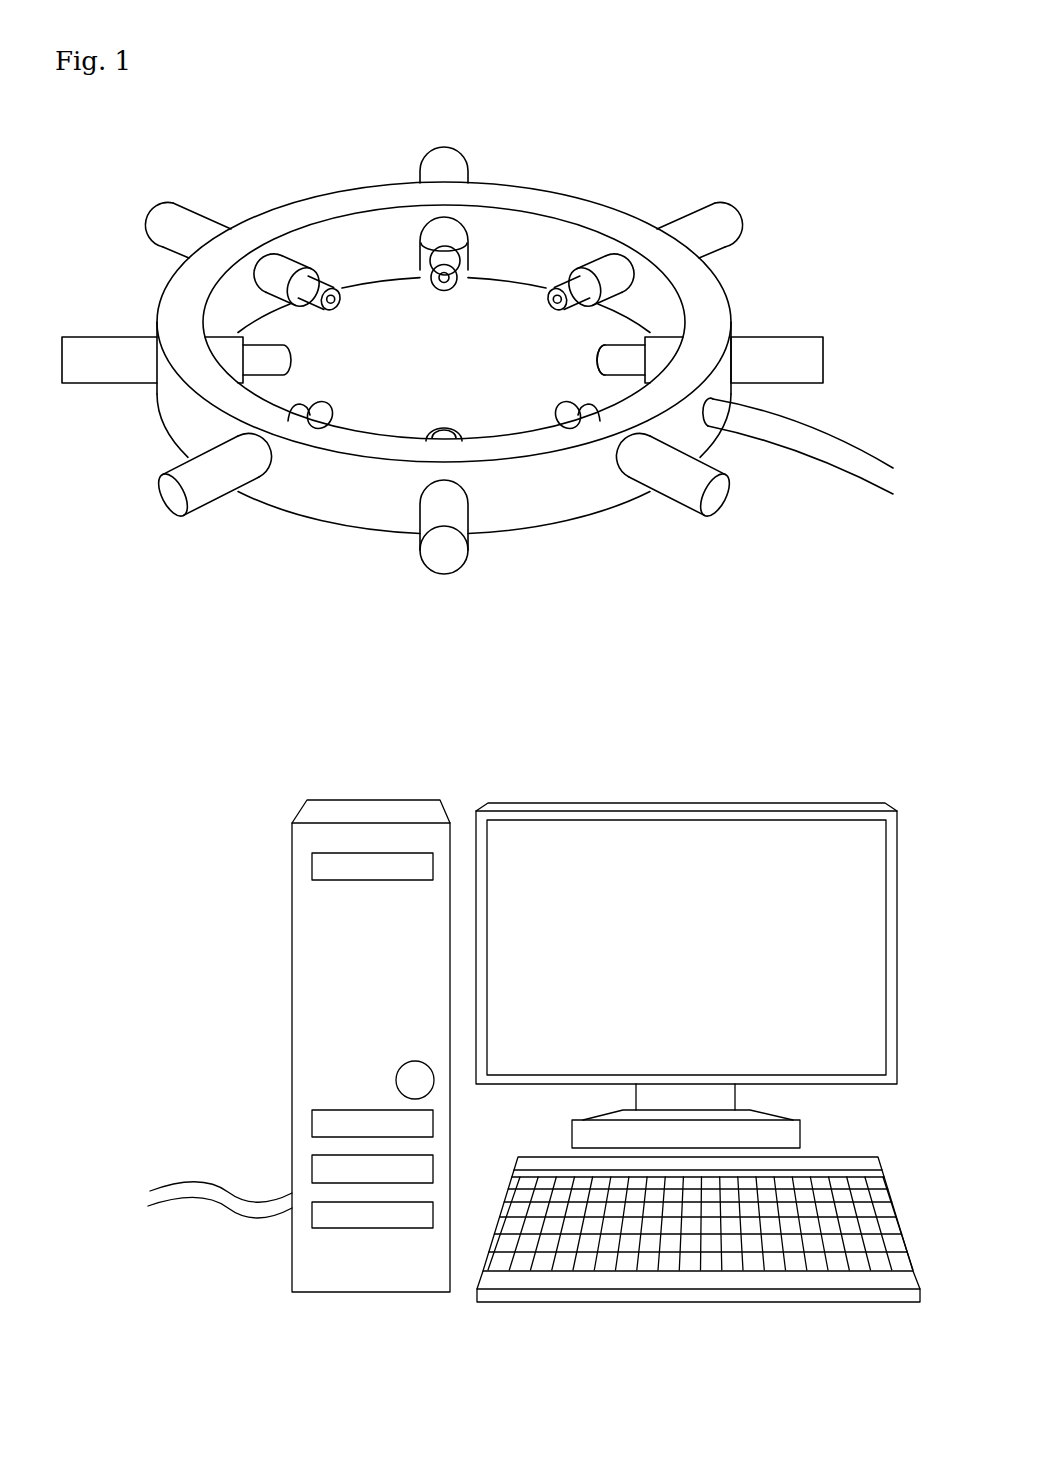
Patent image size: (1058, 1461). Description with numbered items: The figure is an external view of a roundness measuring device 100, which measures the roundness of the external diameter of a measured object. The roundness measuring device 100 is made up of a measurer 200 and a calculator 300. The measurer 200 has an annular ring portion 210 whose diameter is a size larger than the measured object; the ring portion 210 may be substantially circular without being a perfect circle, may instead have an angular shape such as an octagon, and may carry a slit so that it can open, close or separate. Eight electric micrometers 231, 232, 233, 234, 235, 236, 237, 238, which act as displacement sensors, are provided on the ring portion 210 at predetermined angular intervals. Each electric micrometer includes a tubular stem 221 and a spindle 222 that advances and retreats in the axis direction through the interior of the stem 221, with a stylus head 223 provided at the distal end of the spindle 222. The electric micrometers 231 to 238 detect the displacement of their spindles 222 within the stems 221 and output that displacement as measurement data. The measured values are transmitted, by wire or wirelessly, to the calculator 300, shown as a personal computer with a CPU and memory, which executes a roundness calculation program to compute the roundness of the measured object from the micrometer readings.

The roundness measuring device 100 is at (500, 701).
The measurer 200 is at (486, 361).
The ring portion 210 is at (537, 197).
The stem 221 is at (815, 372).
The spindle 222 is at (601, 350).
The stylus head 223 is at (600, 361).
The electric micrometer 231 is at (765, 345).
The electric micrometer 232 is at (716, 206).
The electric micrometer 233 is at (443, 152).
The electric micrometer 234 is at (175, 205).
The electric micrometer 235 is at (93, 342).
The electric micrometer 236 is at (203, 505).
The electric micrometer 237 is at (452, 568).
The electric micrometer 238 is at (686, 494).
The calculator 300 is at (390, 808).